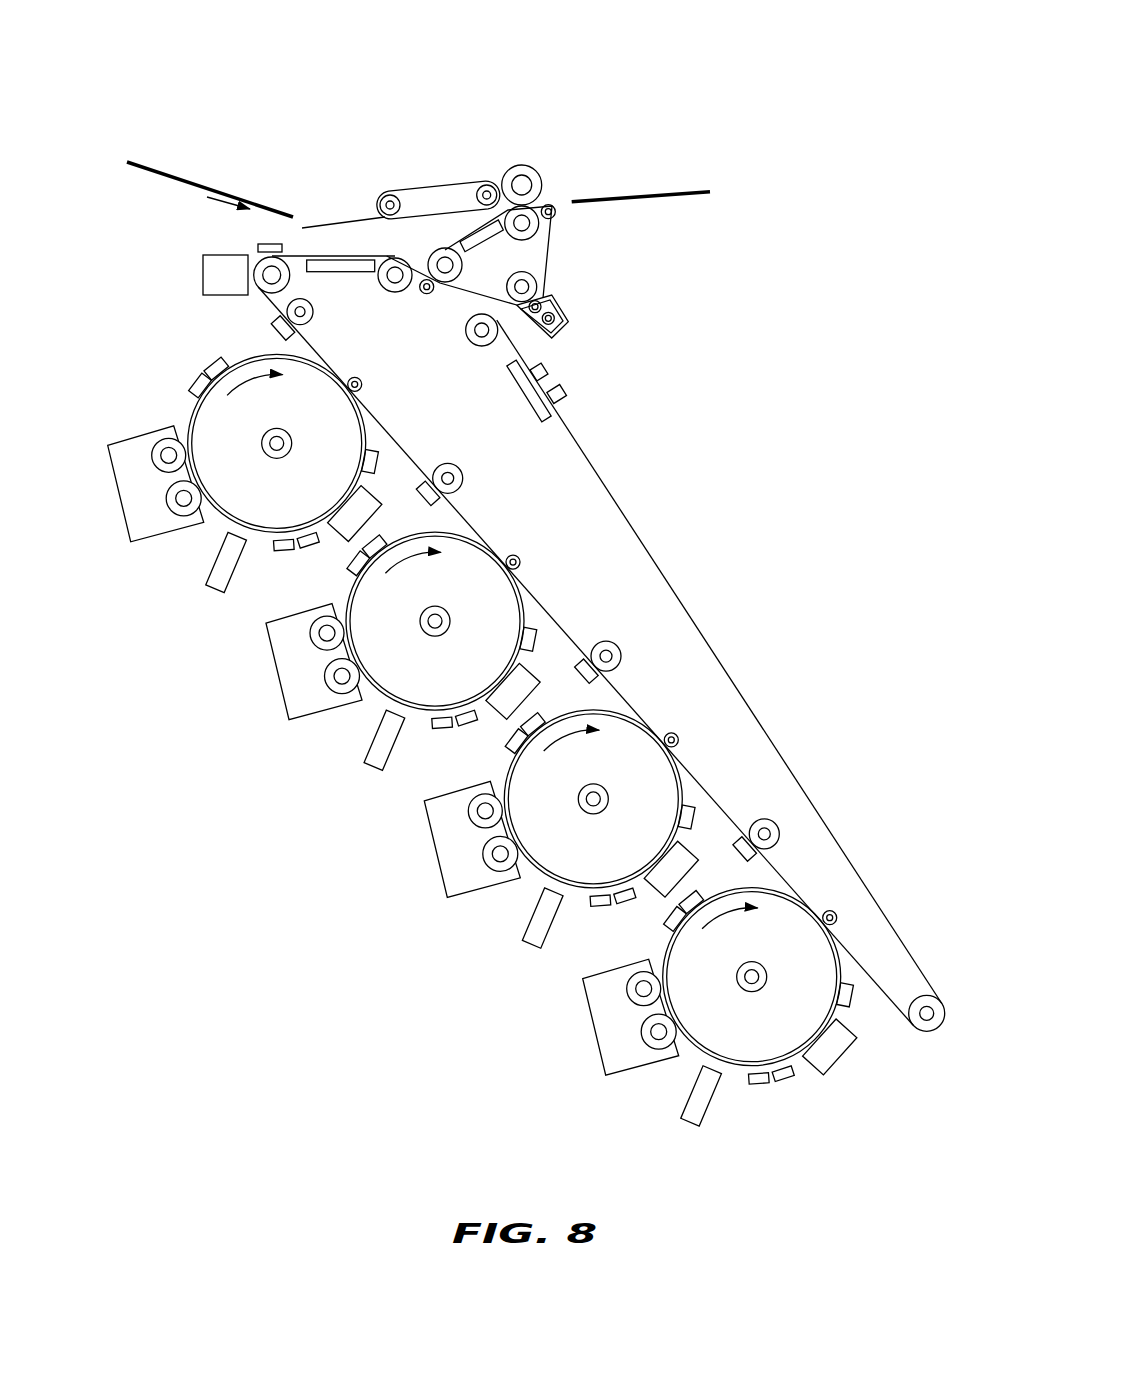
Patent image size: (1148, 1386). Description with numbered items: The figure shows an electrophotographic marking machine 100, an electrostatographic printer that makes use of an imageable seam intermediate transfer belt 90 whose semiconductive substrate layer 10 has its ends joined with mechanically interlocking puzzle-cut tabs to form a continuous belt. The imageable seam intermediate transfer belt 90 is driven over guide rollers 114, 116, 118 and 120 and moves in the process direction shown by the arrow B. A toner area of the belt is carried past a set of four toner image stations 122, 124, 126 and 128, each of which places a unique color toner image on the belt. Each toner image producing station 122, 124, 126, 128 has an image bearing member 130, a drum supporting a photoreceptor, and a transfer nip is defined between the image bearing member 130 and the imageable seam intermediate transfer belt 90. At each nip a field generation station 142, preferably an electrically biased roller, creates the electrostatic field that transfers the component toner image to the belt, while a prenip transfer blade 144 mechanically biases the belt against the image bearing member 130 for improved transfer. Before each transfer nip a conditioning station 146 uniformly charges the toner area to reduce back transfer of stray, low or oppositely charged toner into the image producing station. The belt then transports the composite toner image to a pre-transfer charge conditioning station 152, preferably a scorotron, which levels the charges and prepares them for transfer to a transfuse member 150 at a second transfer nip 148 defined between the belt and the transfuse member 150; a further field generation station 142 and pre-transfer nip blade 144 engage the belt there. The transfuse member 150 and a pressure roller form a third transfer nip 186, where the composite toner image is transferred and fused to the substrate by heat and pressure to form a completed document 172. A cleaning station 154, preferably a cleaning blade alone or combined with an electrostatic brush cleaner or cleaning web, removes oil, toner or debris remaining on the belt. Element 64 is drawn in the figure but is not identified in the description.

The semiconductive substrate layer 10 is at (758, 366).
The transfer assist blade 64 is at (542, 407).
The imageable seam intermediate transfer belt 90 is at (607, 485).
The electrophotographic marking machine 100 is at (602, 80).
The guide roller 114 is at (912, 1026).
The guide roller 116 is at (262, 288).
The guide roller 118 is at (392, 285).
The guide roller 120 is at (470, 327).
The toner image station 122 is at (245, 473).
The toner image station 124 is at (403, 651).
The toner image station 126 is at (561, 829).
The toner image station 128 is at (720, 1007).
The image bearing member 130 is at (438, 430).
The field generation station 142 is at (422, 281).
The prenip transfer blade 144 is at (445, 303).
The conditioning station 146 is at (273, 326).
The second transfer nip 148 is at (443, 249).
The transfuse member 150 is at (543, 245).
The pre-transfer charge conditioning station 152 is at (551, 372).
The cleaning station 154 is at (210, 273).
The completed document 172 is at (658, 193).
The third transfer nip 186 is at (562, 176).
The process direction arrow B is at (667, 603).